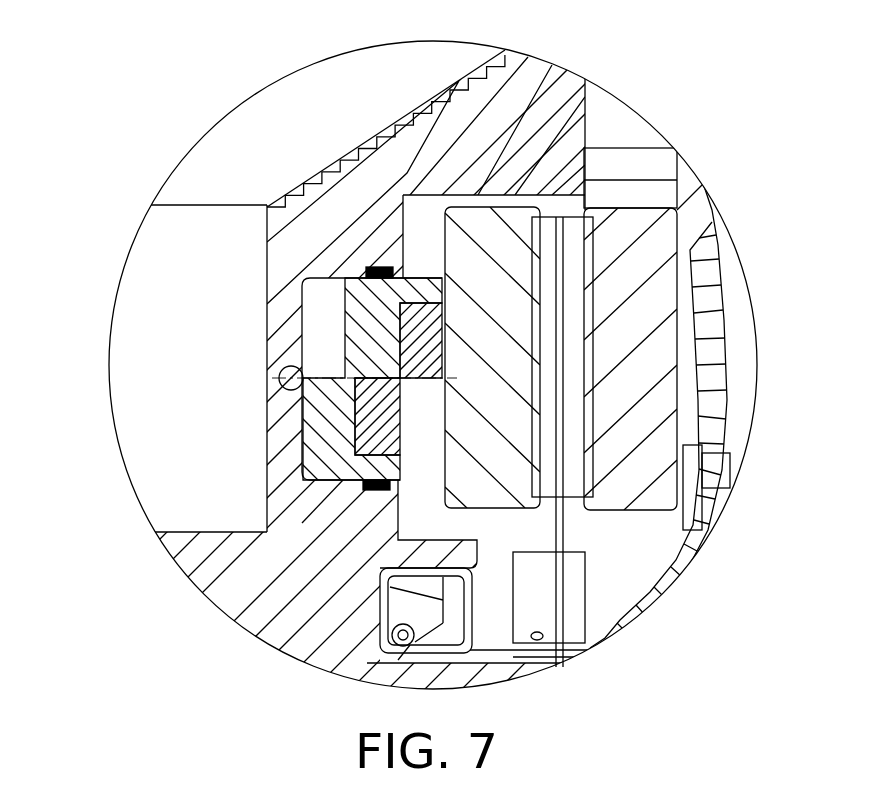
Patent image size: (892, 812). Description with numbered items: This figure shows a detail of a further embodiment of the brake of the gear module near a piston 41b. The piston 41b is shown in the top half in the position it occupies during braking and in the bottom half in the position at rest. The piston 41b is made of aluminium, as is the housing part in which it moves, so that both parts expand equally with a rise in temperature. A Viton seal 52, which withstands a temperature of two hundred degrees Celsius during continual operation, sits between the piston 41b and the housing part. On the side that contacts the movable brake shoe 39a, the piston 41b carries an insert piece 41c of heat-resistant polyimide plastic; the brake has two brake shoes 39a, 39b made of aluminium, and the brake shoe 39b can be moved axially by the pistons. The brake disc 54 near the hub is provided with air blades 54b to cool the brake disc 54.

The Viton seal 52 is at (367, 267).
The brake shoe 39a is at (497, 247).
The brake shoe 39b is at (645, 315).
The piston 41b is at (343, 327).
The insert piece 41c is at (416, 375).
The brake disc 54 is at (567, 428).
The air blades 54b is at (530, 593).